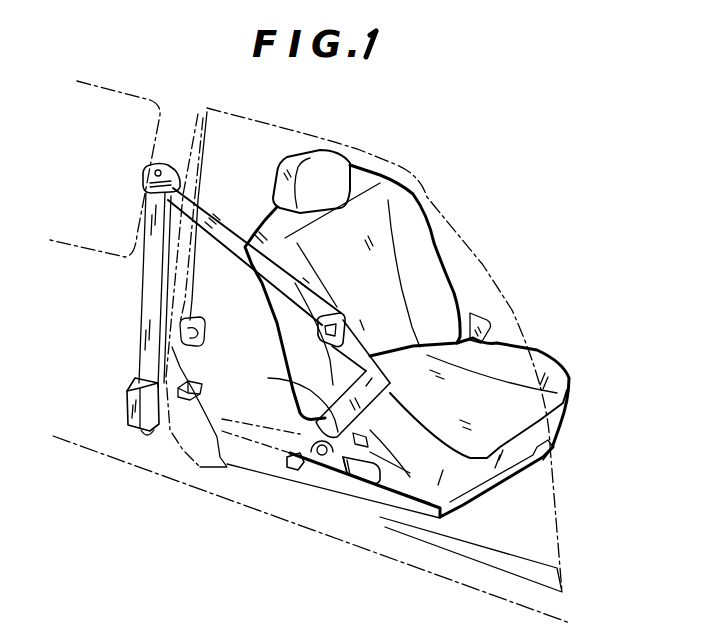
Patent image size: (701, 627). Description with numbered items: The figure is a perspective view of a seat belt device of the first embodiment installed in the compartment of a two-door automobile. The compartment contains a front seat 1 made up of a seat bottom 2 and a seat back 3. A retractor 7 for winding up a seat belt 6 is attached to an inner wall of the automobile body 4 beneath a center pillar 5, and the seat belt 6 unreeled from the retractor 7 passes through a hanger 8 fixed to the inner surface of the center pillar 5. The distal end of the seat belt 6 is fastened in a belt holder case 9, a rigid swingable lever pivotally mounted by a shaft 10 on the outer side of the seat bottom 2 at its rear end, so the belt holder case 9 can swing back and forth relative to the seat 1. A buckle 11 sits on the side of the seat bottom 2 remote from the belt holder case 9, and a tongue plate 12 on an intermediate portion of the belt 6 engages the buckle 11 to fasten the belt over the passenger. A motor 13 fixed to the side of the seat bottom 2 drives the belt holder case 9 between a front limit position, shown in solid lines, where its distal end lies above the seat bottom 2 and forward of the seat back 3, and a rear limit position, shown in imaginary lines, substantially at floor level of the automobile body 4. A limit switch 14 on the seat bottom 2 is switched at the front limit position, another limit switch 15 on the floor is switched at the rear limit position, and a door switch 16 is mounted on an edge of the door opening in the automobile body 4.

The front seat 1 is at (418, 317).
The seat bottom 2 is at (495, 390).
The seat back 3 is at (390, 220).
The automobile body 4 is at (90, 372).
The center pillar 5 is at (165, 138).
The seat belt 6 is at (213, 218).
The retractor 7 is at (137, 420).
The hanger 8 is at (172, 165).
The belt holder case 9 is at (393, 457).
The shaft 10 is at (318, 458).
The buckle 11 is at (470, 327).
The tongue plate 12 is at (340, 313).
The motor 13 is at (360, 478).
The limit switch 14 is at (280, 378).
The limit switch 15 is at (290, 473).
The door switch 16 is at (195, 442).